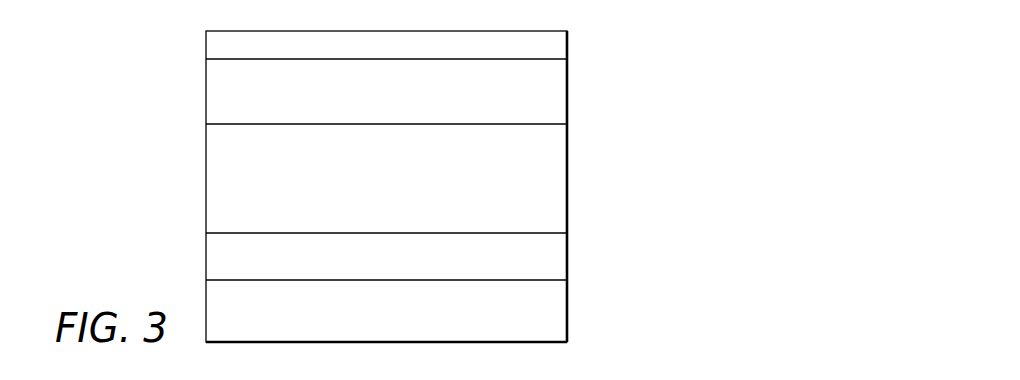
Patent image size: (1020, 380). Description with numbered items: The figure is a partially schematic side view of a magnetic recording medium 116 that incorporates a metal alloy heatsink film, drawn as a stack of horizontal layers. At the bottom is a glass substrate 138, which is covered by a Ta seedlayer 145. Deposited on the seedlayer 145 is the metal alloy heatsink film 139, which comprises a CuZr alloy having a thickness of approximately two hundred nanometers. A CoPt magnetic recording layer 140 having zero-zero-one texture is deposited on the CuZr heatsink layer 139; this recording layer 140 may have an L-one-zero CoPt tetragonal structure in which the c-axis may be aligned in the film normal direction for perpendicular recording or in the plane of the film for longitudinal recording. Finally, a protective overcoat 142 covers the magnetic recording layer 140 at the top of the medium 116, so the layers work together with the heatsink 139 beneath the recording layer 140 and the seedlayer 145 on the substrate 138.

The magnetic recording medium 116 is at (183, 90).
The protective overcoat 142 is at (557, 45).
The CoPt magnetic recording layer 140 is at (557, 97).
The metal alloy heatsink film 139 is at (556, 182).
The Ta seedlayer 145 is at (556, 259).
The glass substrate 138 is at (557, 310).